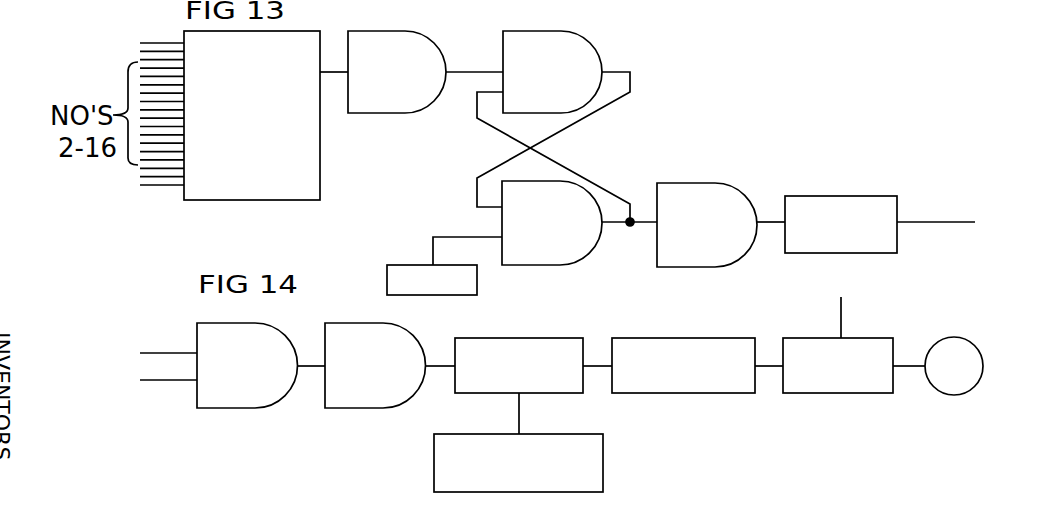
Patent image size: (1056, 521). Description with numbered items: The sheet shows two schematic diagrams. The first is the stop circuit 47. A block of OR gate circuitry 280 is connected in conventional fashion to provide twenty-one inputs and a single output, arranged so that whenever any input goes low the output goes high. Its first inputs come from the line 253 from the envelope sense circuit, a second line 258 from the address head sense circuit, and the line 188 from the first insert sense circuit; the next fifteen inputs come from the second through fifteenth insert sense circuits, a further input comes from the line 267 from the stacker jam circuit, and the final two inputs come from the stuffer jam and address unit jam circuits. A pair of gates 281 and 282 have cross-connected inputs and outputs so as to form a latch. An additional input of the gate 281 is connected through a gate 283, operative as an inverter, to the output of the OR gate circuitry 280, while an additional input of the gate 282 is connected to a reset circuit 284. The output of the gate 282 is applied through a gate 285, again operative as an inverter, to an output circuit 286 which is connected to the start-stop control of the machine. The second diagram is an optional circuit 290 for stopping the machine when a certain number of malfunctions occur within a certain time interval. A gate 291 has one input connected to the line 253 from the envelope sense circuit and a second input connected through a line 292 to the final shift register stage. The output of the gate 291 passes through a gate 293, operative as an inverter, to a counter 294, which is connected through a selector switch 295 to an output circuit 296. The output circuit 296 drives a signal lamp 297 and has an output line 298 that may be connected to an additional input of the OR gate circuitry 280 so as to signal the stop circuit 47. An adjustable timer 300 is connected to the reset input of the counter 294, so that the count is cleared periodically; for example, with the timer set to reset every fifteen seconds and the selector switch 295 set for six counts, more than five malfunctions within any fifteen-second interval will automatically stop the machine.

In FIG. 13, the stop circuit 47 is at (722, 78).
In FIG. 13, the line 188 is at (140, 60).
In FIG. 13, the line 253 is at (140, 43).
In FIG. 14, the line 253 is at (171, 353).
In FIG. 13, the input line 258 is at (140, 51).
In FIG. 13, the line 267 is at (140, 170).
In FIG. 13, the OR gate circuitry 280 is at (320, 165).
In FIG. 13, the gate 281 is at (578, 45).
In FIG. 13, the gate 282 is at (575, 193).
In FIG. 13, the gate 283 is at (417, 43).
In FIG. 13, the reset circuit 284 is at (407, 265).
In FIG. 13, the gate 285 is at (712, 190).
In FIG. 13, the output circuit 286 is at (866, 205).
In FIG. 14, the circuit 290 is at (953, 315).
In FIG. 14, the gate 291 is at (258, 335).
In FIG. 14, the line 292 is at (172, 381).
In FIG. 14, the gate 293 is at (385, 335).
In FIG. 14, the counter 294 is at (553, 345).
In FIG. 14, the selector switch 295 is at (722, 343).
In FIG. 14, the output circuit 296 is at (865, 343).
In FIG. 14, the signal lamp 297 is at (965, 352).
In FIG. 14, the output line 298 is at (852, 280).
In FIG. 14, the adjustable timer 300 is at (580, 440).